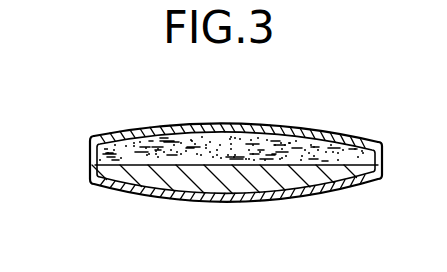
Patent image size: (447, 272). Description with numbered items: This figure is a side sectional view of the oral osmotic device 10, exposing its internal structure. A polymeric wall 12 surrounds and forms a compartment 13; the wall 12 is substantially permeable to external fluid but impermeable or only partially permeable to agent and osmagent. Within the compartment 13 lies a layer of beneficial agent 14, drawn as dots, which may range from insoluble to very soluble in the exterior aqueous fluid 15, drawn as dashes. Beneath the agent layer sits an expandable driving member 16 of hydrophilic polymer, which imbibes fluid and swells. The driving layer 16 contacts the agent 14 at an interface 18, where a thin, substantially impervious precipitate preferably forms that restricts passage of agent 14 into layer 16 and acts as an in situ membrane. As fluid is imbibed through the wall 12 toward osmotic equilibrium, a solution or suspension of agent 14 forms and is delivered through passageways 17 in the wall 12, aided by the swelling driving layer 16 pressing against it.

The osmotic device 10 is at (146, 207).
The wall 12 is at (93, 135).
The compartment 13 is at (143, 132).
The beneficial agent 14 is at (344, 152).
The exterior aqueous fluid 15 is at (324, 145).
The expandable driving member 16 is at (210, 180).
The passageways 17 is at (295, 123).
The interface 18 is at (322, 197).